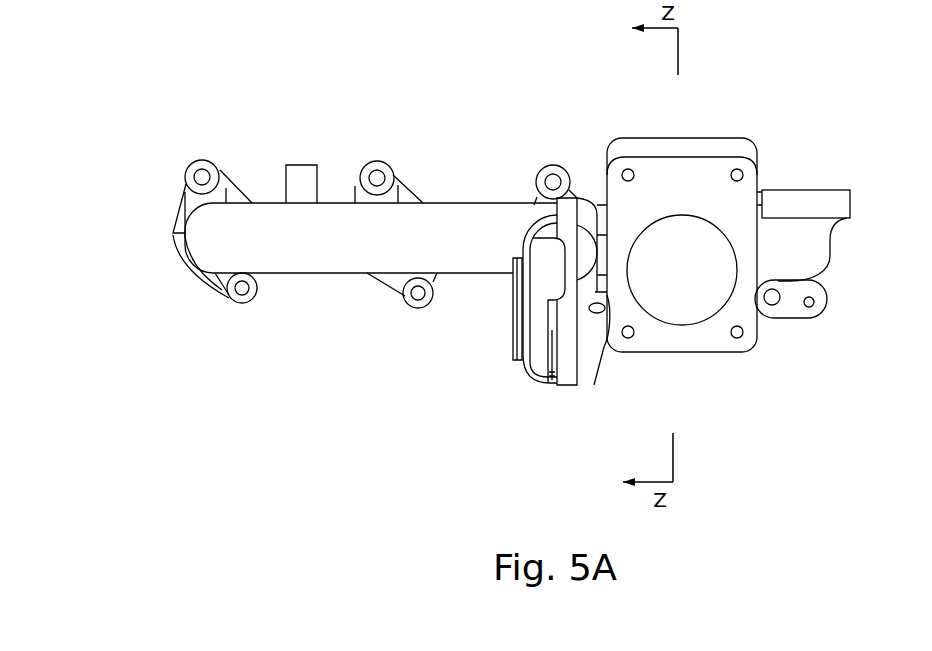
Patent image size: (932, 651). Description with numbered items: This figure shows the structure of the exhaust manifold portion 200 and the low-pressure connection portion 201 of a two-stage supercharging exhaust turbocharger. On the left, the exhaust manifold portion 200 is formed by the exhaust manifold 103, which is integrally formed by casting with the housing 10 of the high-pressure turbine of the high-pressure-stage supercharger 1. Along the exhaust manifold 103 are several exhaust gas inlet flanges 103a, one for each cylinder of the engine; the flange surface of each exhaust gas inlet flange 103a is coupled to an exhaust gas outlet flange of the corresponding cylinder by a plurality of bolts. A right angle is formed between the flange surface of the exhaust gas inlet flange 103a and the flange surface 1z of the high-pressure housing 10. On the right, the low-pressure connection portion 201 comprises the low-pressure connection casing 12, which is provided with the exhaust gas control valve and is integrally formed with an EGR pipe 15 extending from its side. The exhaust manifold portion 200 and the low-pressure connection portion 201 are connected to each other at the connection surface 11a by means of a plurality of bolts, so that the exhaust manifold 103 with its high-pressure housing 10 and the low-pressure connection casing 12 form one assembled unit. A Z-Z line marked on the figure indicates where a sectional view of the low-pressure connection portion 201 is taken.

The high-pressure-stage supercharger 1 is at (506, 389).
The housing 10 is at (535, 378).
The connection surface 11a is at (605, 340).
The low-pressure connection casing 12 is at (707, 340).
The EGR pipe 15 is at (850, 205).
The flange surface 1z is at (512, 332).
The exhaust manifold 103 is at (312, 263).
The exhaust gas inlet flange 103a is at (228, 186).
The exhaust manifold portion 200 is at (541, 130).
The low-pressure connection portion 201 is at (738, 128).